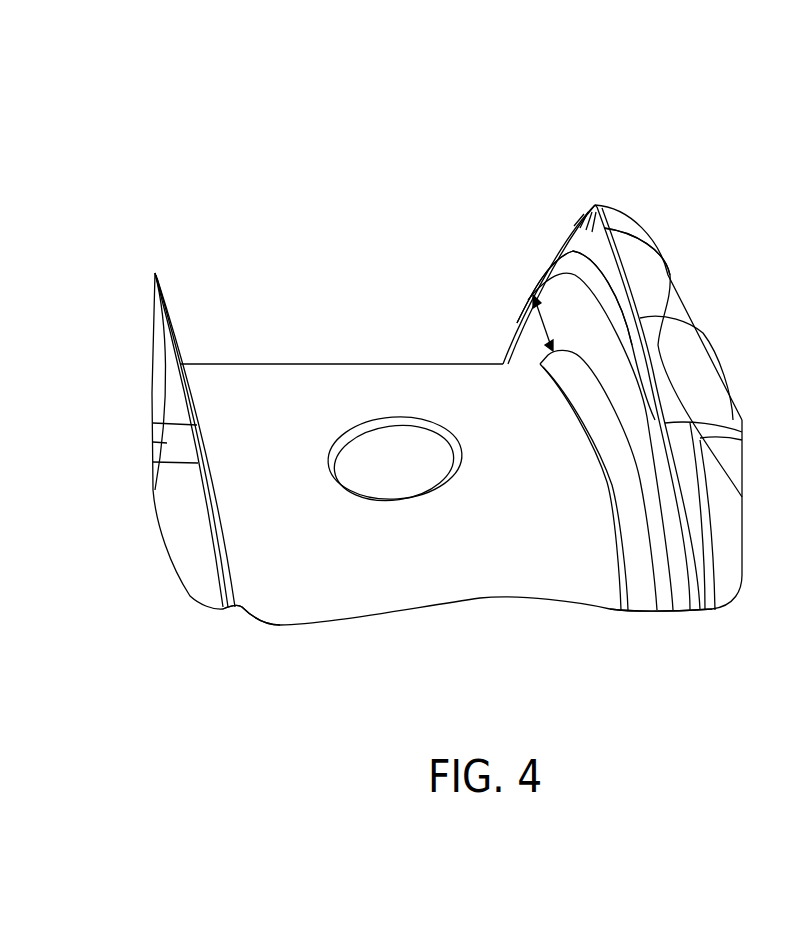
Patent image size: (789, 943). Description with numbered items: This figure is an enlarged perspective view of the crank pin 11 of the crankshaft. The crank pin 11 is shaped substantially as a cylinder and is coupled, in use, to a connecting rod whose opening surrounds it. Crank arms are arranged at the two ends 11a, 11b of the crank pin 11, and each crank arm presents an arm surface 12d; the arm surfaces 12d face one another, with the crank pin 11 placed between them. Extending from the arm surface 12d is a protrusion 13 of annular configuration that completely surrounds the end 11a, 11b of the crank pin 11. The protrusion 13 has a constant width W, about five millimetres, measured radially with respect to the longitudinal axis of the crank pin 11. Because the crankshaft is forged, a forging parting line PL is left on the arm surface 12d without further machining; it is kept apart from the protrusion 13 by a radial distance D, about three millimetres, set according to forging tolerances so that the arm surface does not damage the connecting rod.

The crank pin 11 is at (452, 572).
The end of the crank pin 11a is at (240, 611).
The end of the crank pin 11b is at (638, 610).
The arm surface 12d is at (567, 248).
The protrusion 13 is at (580, 313).
The width W is at (536, 323).
The distance D is at (583, 247).
The forging parting line PL is at (595, 205).